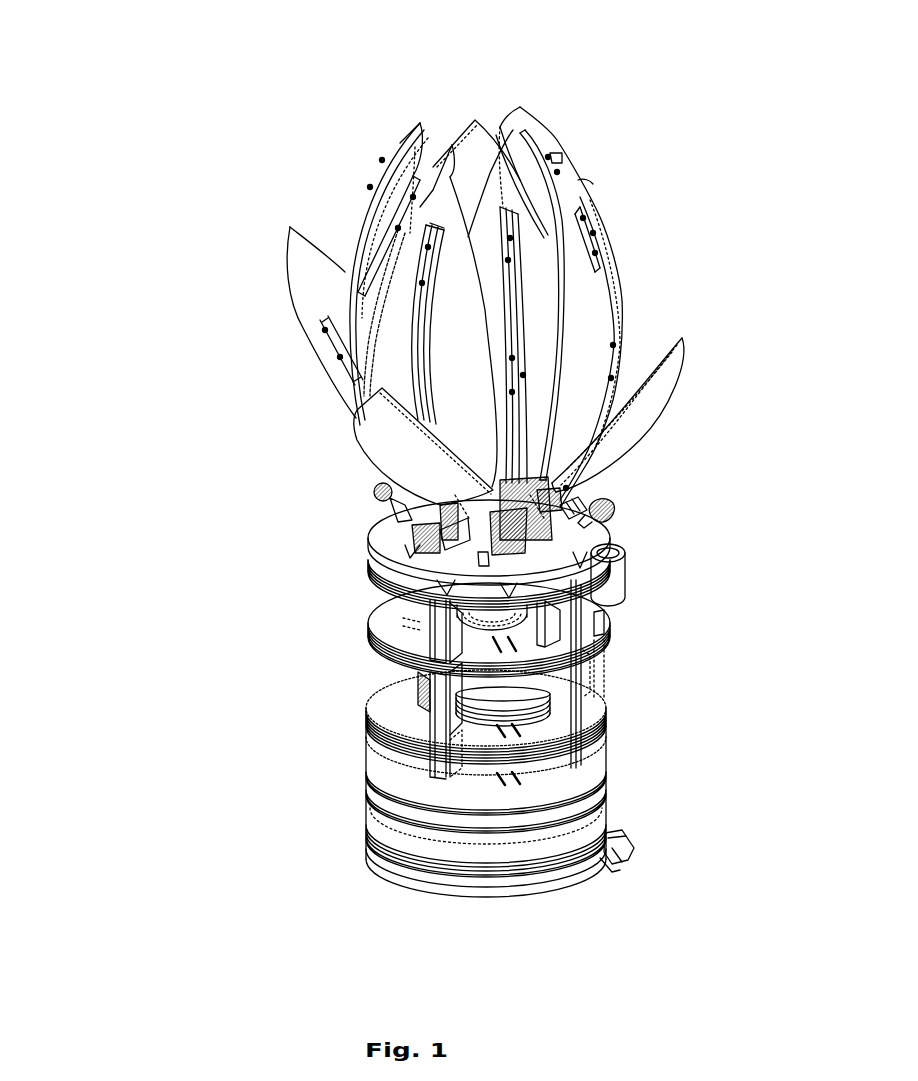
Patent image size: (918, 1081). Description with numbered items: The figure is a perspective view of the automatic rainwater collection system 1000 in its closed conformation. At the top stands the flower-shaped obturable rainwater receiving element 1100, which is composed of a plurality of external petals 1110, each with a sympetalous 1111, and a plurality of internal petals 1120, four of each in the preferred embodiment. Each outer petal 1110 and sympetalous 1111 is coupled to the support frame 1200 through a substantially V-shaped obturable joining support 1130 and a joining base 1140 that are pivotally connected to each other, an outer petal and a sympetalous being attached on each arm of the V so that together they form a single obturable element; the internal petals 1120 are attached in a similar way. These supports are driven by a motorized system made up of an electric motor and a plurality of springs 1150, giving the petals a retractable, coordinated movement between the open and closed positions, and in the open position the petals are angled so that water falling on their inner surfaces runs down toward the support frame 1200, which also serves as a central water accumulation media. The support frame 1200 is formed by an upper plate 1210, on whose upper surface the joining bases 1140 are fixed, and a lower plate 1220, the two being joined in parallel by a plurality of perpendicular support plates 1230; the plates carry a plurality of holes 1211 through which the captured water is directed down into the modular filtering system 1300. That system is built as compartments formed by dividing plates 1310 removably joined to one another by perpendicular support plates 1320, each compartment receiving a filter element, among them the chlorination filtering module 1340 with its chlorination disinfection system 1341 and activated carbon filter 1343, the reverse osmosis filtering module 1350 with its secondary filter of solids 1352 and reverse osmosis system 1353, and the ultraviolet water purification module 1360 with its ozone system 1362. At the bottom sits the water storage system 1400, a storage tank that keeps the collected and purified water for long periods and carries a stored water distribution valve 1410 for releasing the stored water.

The automatic rainwater collection system 1000 is at (140, 93).
The flower-shaped obturable rainwater receiving element 1100 is at (299, 258).
The external petal 1110 is at (572, 190).
The internal petal 1120 is at (500, 195).
The V-shaped obturable joining support 1130 is at (628, 307).
The sympetalous 1111 is at (660, 406).
The joining base 1140 is at (570, 513).
The spring 1150 is at (615, 510).
The support frame 1200 is at (380, 533).
The upper plate 1210 is at (390, 517).
The hole 1211 is at (483, 560).
The lower plate 1220 is at (420, 574).
The perpendicular support plate 1230 is at (435, 582).
The modular filtering system 1300 is at (397, 652).
The dividing plate 1310 is at (385, 617).
The perpendicular support plate 1320 is at (448, 702).
The chlorination filtering module 1340 is at (597, 627).
The chlorination disinfection system 1341 is at (608, 582).
The activated carbon filter 1343 is at (510, 622).
The reverse osmosis filtering module 1350 is at (596, 675).
The secondary filter of solids 1352 is at (540, 677).
The reverse osmosis system 1353 is at (533, 702).
The ultraviolet water purification module 1360 is at (595, 765).
The ozone system 1362 is at (530, 760).
The water storage system 1400 is at (412, 828).
The stored water distribution valve 1410 is at (630, 852).